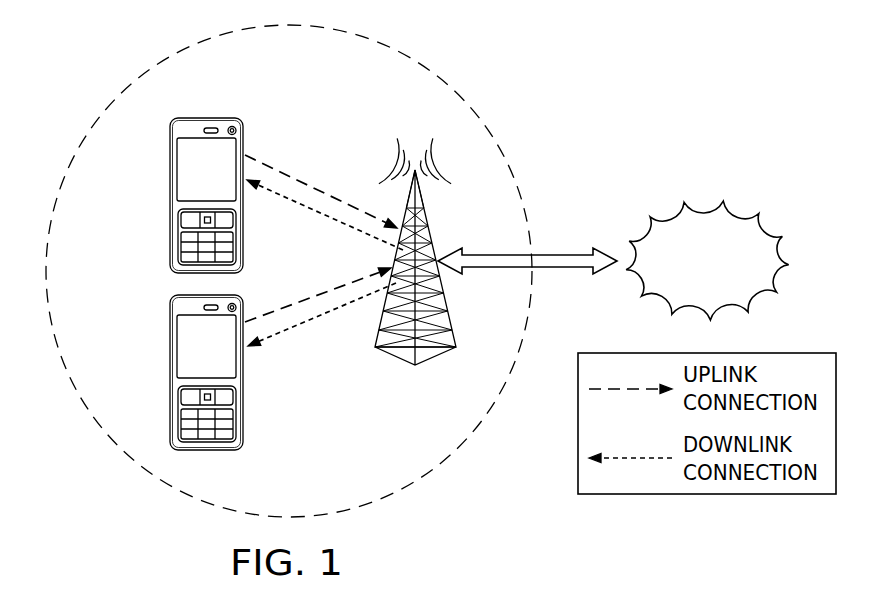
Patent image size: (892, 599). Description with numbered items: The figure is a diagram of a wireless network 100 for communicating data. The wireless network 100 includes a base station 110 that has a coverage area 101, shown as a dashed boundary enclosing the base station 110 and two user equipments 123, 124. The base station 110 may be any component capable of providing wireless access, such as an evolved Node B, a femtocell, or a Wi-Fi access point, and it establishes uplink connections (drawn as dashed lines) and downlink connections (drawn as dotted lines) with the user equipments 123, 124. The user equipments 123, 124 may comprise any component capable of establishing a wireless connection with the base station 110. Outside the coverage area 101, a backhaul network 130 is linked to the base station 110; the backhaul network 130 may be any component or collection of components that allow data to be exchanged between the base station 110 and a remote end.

The wireless network 100 is at (630, 54).
The coverage area 101 is at (170, 51).
The base station 110 is at (433, 347).
The user equipment 123 is at (171, 201).
The user equipment 124 is at (171, 371).
The backhaul network 130 is at (709, 189).